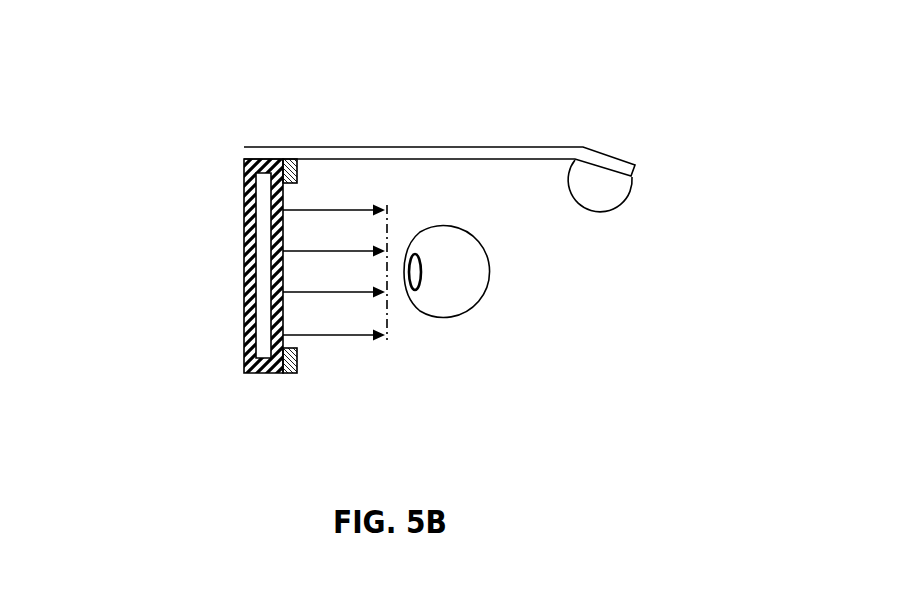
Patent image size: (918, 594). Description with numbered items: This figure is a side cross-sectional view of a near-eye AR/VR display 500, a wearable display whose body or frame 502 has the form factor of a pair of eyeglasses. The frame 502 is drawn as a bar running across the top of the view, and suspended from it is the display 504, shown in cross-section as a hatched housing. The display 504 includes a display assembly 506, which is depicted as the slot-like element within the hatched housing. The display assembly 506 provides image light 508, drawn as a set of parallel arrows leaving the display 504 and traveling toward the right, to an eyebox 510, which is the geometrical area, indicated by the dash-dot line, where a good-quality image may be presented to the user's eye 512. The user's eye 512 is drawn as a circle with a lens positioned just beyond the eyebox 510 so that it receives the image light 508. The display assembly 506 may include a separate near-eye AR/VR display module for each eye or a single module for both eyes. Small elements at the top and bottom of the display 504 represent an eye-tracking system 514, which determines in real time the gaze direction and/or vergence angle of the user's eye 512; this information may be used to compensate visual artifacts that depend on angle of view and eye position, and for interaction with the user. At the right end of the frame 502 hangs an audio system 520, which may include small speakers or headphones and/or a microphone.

The near-eye AR/VR display 500 is at (280, 98).
The frame 502 is at (546, 147).
The display 504 is at (247, 173).
The display assembly 506 is at (265, 245).
The image light 508 is at (348, 355).
The eyebox 510 is at (392, 327).
The user's eye 512 is at (490, 278).
The eye-tracking system 514 is at (292, 174).
The audio system 520 is at (618, 191).